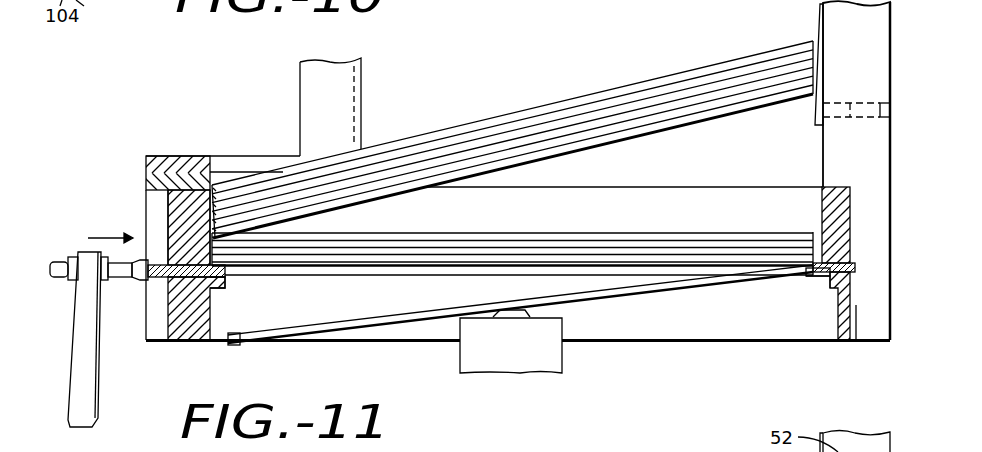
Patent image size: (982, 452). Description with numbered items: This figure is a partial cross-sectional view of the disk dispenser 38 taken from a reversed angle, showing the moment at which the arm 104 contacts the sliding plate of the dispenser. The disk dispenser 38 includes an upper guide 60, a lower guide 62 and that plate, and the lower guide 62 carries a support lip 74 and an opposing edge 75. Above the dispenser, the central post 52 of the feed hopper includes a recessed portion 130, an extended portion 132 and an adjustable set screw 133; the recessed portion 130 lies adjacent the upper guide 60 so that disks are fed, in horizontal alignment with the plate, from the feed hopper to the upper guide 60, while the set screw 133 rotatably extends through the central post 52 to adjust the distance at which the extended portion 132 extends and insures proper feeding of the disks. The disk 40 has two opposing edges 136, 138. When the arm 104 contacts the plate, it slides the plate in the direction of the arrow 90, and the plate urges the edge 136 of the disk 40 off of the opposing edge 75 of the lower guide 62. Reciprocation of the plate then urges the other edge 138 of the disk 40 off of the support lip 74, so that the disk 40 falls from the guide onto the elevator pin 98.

The disk dispenser 38 is at (163, 150).
The disk 40 is at (347, 322).
The central post 52 is at (838, 30).
The upper guide 60 is at (852, 208).
The lower guide 62 is at (851, 292).
The support lip 74 is at (818, 277).
The opposing edge 75 is at (223, 283).
The arrow 90 is at (107, 228).
The elevator pin 98 is at (521, 350).
The arm 104 is at (85, 383).
The recessed portion 130 is at (823, 147).
The extended portion 132 is at (817, 78).
The adjustable set screw 133 is at (855, 120).
The edge 136 is at (228, 345).
The other edge 138 is at (800, 278).